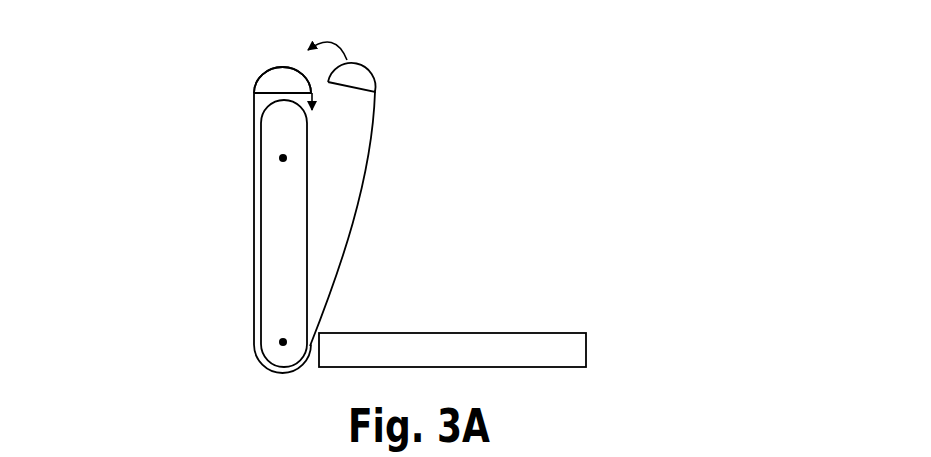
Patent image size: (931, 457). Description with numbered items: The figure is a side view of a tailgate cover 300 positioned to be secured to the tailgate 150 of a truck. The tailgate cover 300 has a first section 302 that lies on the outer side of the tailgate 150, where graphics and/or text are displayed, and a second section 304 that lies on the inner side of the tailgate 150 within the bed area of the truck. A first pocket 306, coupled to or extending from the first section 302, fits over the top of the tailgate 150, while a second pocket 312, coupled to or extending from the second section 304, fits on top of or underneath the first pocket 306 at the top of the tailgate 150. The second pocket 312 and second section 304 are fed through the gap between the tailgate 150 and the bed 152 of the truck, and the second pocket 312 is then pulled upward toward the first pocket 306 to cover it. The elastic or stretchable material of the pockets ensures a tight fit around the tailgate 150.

The tailgate cover 300 is at (144, 110).
The first section 302 is at (253, 140).
The second section 304 is at (369, 148).
The first pocket 306 is at (288, 76).
The second pocket 312 is at (358, 75).
The tailgate 150 is at (298, 223).
The bed 152 is at (530, 340).